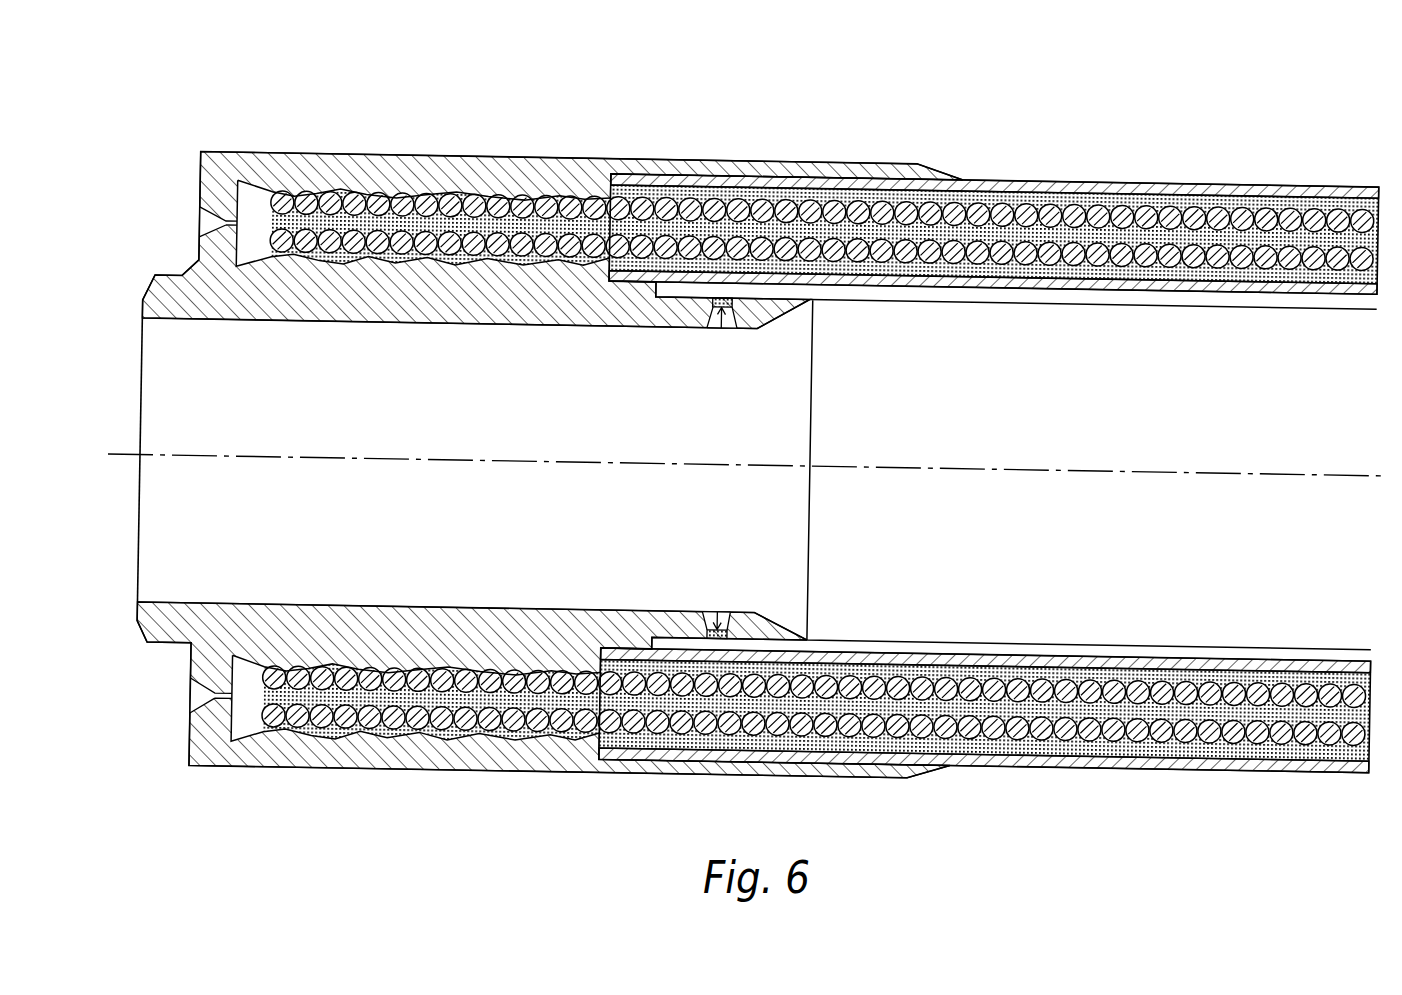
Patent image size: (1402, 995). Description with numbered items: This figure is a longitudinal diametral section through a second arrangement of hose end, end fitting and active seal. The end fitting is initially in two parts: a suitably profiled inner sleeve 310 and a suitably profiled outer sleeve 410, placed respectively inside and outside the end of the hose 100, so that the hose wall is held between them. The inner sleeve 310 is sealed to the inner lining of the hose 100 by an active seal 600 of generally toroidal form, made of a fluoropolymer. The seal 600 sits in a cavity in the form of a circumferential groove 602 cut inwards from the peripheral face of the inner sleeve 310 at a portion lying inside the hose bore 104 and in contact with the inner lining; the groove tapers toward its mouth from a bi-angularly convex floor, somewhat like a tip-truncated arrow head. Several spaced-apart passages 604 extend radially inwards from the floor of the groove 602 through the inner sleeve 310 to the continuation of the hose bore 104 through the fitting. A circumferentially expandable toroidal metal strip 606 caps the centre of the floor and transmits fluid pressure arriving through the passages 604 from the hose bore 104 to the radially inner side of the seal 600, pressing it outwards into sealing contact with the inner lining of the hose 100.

The hose 100 is at (1097, 270).
The hose bore 104 is at (1287, 598).
The inner sleeve 310 is at (212, 305).
The outer sleeve 410 is at (213, 173).
The active seal 600 is at (733, 303).
The circumferential groove 602 is at (713, 305).
The passages 604 is at (722, 325).
The toroidal strip 606 is at (720, 323).